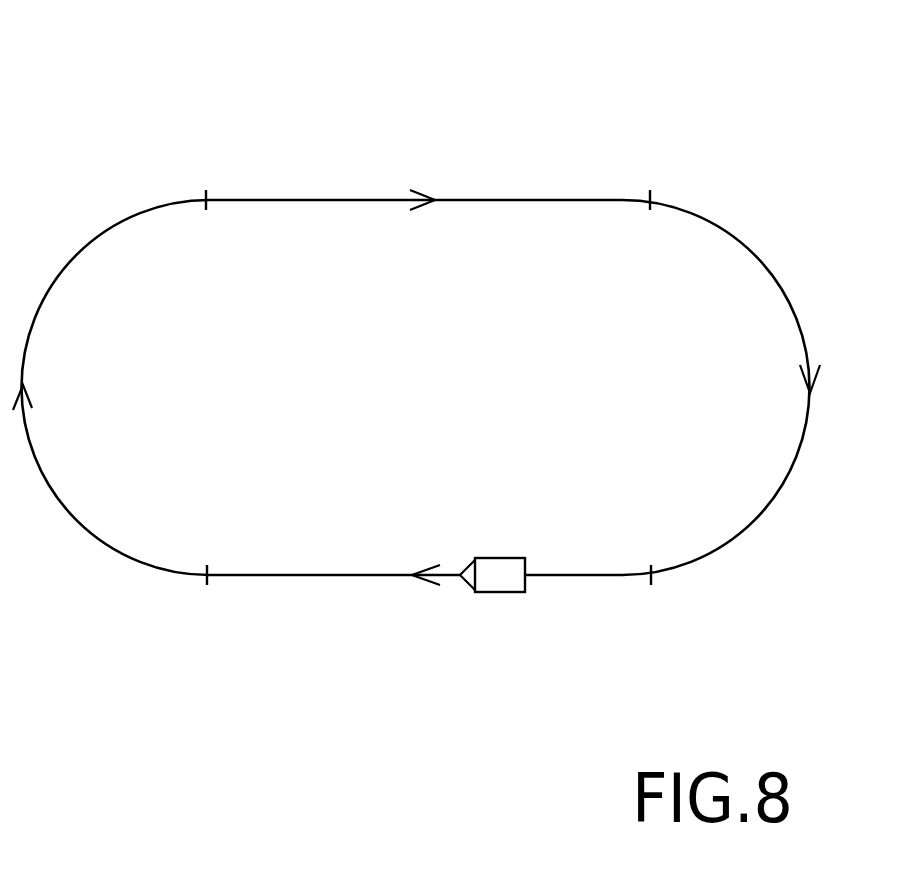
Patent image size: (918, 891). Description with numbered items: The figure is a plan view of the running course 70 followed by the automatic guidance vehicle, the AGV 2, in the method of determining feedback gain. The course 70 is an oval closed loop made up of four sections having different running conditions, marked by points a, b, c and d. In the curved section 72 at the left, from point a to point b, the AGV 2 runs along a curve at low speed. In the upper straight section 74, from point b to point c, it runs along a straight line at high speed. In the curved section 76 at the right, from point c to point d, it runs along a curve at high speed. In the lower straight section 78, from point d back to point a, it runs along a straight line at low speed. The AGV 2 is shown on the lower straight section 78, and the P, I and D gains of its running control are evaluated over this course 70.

The running course 70 is at (416, 338).
The section 72 is at (37, 322).
The section 74 is at (290, 200).
The section 76 is at (785, 297).
The section 78 is at (291, 590).
The AGV 2 is at (500, 568).